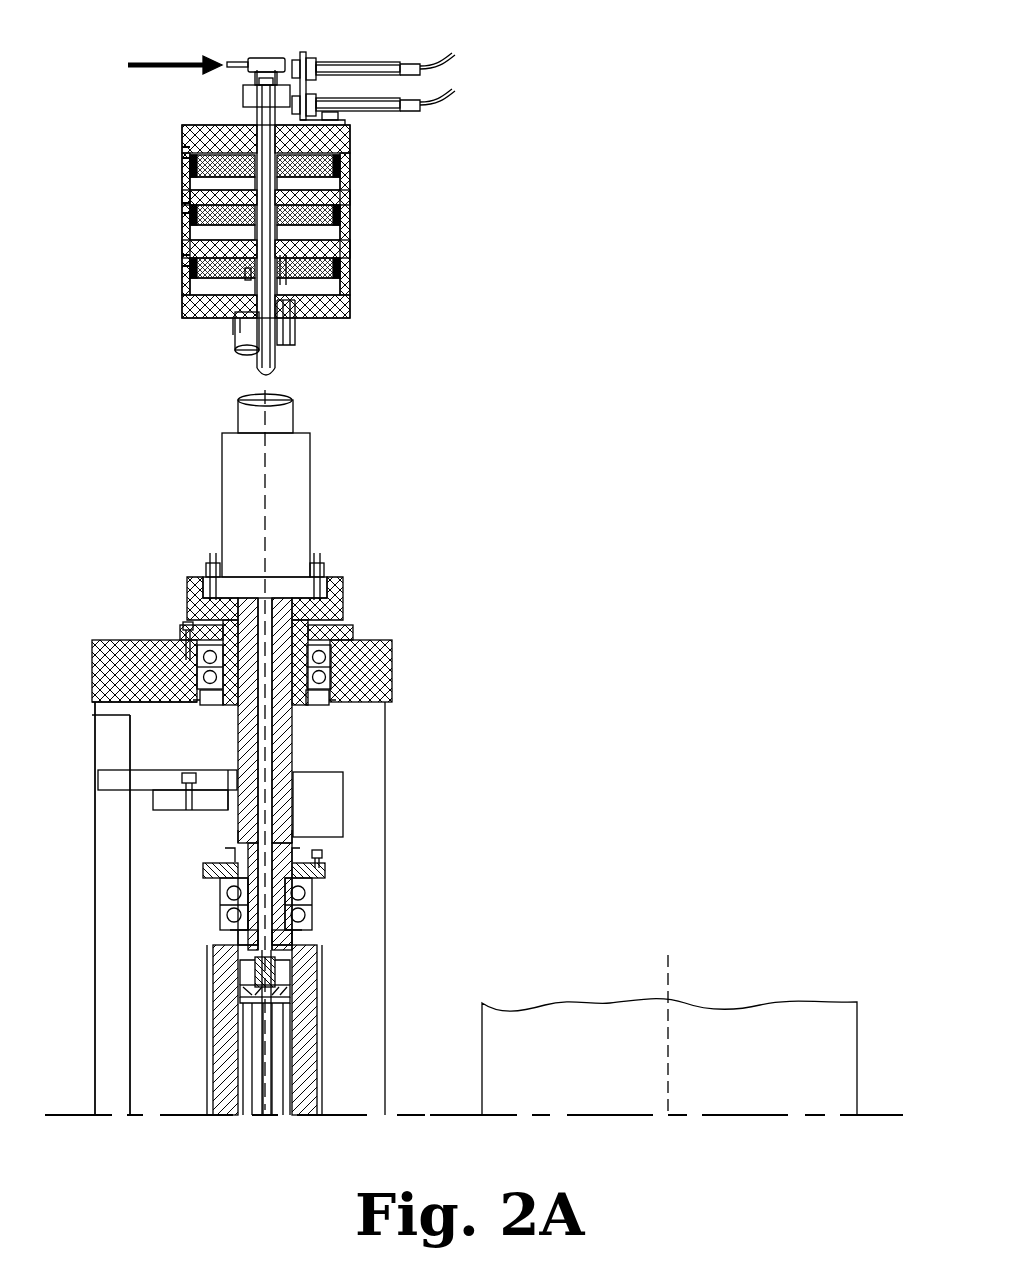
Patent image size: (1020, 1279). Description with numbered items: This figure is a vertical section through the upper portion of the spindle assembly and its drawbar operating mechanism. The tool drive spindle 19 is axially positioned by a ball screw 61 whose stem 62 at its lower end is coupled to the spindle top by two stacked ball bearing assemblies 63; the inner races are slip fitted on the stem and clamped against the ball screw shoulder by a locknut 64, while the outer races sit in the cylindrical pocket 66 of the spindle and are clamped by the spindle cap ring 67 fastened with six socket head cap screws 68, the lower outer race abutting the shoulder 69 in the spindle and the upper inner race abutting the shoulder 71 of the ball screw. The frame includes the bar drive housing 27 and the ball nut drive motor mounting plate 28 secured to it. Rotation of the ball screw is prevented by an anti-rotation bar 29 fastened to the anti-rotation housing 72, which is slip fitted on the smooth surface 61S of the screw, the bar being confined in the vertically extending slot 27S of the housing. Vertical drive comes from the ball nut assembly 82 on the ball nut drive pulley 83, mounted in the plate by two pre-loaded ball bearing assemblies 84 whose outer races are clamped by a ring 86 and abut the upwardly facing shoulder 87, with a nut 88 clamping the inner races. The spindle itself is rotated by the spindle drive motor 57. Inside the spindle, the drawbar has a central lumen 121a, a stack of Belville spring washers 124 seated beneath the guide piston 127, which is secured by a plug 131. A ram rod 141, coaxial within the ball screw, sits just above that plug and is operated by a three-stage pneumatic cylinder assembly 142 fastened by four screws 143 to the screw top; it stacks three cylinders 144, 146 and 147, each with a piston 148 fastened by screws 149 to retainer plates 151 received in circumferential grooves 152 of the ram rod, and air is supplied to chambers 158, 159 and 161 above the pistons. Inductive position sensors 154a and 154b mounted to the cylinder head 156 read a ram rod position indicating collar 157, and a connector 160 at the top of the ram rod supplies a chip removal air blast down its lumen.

The three-stage pneumatic cylinder assembly 142 is at (120, 253).
The cylinder head 156 is at (340, 150).
The chamber 158 is at (190, 148).
The cylinder 144 is at (190, 183).
The chamber 159 is at (192, 198).
The cylinder 146 is at (192, 233).
The circumferential groove 152 is at (290, 222).
The piston 148 is at (337, 270).
The chamber 161 is at (188, 255).
The cylinder 147 is at (188, 283).
The retainer plate 151 is at (300, 265).
The screw 149 is at (255, 288).
The screw 143 is at (298, 325).
The ball screw 61 is at (245, 340).
The connector 160 is at (252, 58).
The ram rod position indicating collar 157 is at (243, 95).
The inductive position sensor 154b is at (335, 68).
The inductive position sensor 154a is at (338, 105).
The ram rod 141 is at (272, 362).
The ball nut assembly 82 is at (222, 465).
The ball nut drive pulley 83 is at (203, 588).
The upwardly facing shoulder 87 is at (340, 700).
The ball nut drive motor mounting plate 28 is at (385, 660).
The ring 86 is at (180, 628).
The ball bearing assembly 84 is at (200, 670).
The nut 88 is at (200, 712).
The anti-rotation bar 29 is at (100, 788).
The smooth surface 61S is at (285, 788).
The anti-rotation housing 72 is at (330, 830).
The socket head cap screw 68 is at (320, 858).
The spindle cap ring 67 is at (205, 870).
The shoulder 71 is at (315, 888).
The ball bearing assemblies 63 is at (190, 905).
The shoulder 69 is at (310, 915).
The stem 62 is at (220, 925).
The locknut 64 is at (312, 945).
The spindle 19 is at (220, 1068).
The cylindrical pocket 66 is at (255, 962).
The guide piston 127 is at (275, 1002).
The plug 131 is at (230, 1005).
The central lumen 121a is at (295, 1030).
The stack of Belville spring washers 124 is at (285, 1075).
The vertically extending slot 27S is at (95, 1010).
The bar drive housing 27 is at (95, 1055).
The spindle drive motor 57 is at (857, 1040).